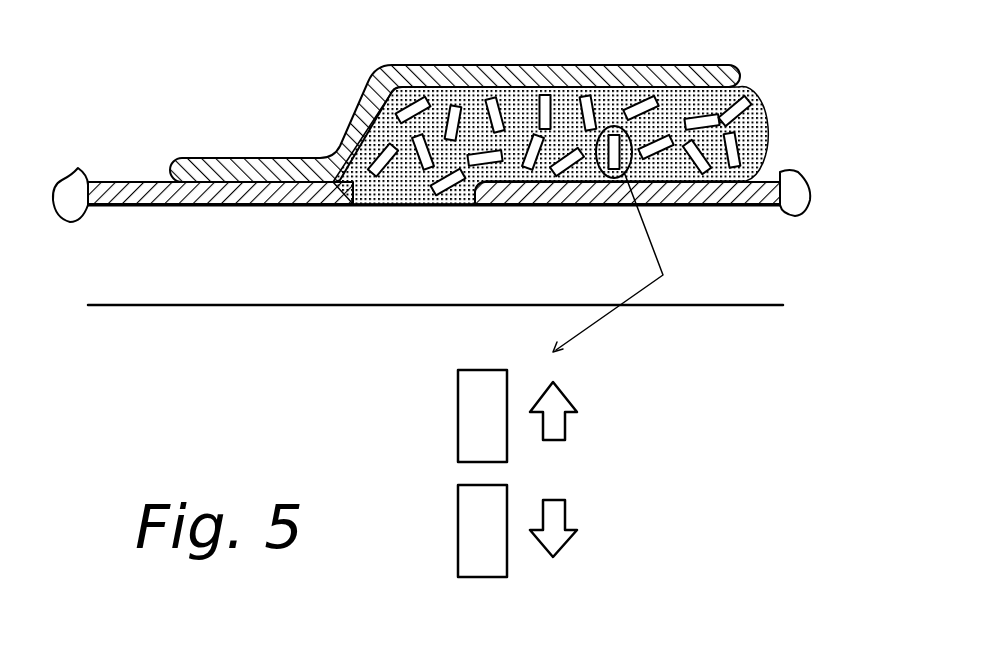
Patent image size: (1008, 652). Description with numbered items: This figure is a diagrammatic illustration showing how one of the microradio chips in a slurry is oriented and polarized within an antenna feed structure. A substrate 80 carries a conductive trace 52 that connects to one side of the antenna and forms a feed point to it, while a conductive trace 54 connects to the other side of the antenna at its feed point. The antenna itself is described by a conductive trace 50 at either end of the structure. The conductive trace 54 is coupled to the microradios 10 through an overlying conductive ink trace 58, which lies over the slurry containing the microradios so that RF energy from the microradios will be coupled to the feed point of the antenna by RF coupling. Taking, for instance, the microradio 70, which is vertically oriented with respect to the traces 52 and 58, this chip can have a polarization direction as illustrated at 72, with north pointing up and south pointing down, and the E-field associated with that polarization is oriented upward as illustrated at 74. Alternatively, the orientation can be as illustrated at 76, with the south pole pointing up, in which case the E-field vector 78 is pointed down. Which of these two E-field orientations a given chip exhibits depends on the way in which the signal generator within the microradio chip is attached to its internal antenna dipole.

The microradios 10 is at (740, 97).
The conductive trace 50 is at (108, 160).
The conductive trace 52 is at (700, 205).
The conductive trace 54 is at (218, 206).
The conductive ink trace 58 is at (257, 158).
The microradio 70 is at (586, 178).
The polarization direction 72 is at (458, 413).
The E-field 74 is at (562, 403).
The polarization orientation 76 is at (458, 530).
The E-field vector 78 is at (560, 512).
The substrate 80 is at (278, 253).